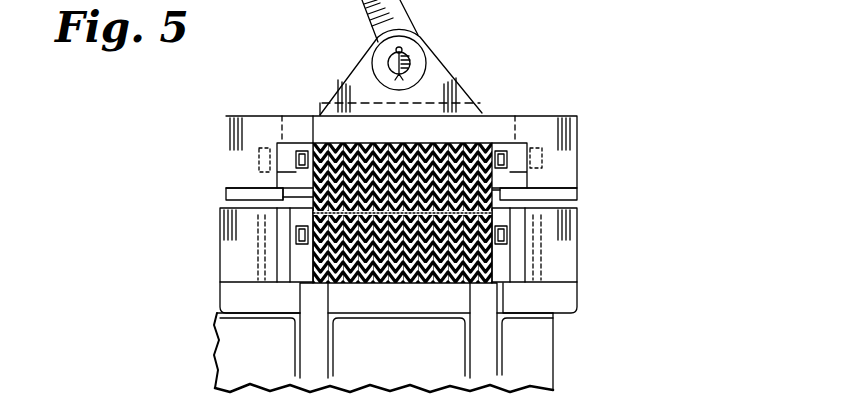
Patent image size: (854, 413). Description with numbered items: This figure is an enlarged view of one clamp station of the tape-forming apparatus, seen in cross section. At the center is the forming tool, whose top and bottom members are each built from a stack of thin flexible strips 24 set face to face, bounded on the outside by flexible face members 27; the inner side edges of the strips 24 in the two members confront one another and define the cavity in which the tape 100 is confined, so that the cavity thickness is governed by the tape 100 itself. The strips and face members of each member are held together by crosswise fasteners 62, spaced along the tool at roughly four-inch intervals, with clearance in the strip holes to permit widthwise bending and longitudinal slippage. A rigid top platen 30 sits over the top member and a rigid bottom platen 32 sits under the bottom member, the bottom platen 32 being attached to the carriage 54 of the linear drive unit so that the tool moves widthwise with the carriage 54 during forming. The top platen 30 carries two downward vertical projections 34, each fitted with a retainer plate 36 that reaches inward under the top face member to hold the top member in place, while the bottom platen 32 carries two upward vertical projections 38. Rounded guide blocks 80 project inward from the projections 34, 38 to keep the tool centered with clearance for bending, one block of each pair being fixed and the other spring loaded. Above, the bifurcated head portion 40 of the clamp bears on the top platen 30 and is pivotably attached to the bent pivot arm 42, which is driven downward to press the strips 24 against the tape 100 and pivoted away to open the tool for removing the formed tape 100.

The thin flexible strips 24 is at (457, 150).
The flexible outer face member 27 is at (510, 317).
The top platen 30 is at (300, 122).
The bottom platen 32 is at (400, 300).
The vertical projections 34 is at (237, 131).
The retainer plate 36 is at (283, 205).
The vertical projections 38 is at (233, 253).
The bifurcated head portion 40 is at (458, 80).
The bent pivot arm 42 is at (408, 10).
The carriage 54 is at (277, 377).
The crosswise fasteners 62 is at (513, 263).
The guide blocks 80 is at (523, 178).
The tape 100 is at (493, 224).